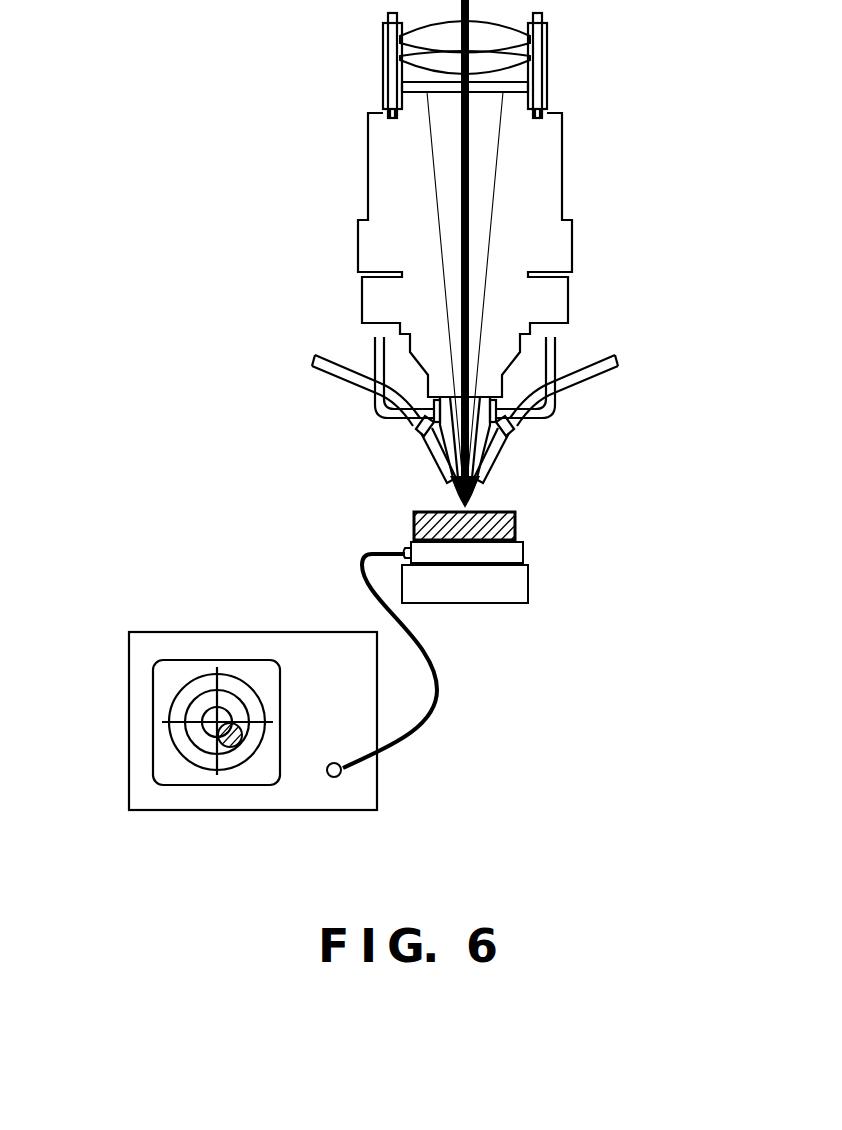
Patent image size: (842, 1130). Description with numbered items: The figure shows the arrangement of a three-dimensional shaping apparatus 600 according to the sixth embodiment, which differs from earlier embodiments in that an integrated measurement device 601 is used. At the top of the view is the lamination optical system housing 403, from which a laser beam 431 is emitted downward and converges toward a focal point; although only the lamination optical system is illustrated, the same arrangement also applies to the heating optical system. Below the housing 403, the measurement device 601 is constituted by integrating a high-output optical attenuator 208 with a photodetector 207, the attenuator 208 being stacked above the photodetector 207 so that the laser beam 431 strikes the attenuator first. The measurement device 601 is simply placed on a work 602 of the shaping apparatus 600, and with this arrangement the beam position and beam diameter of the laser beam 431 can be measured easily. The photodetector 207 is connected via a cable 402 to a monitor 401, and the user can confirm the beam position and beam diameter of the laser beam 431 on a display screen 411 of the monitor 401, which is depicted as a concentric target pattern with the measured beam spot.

The 3D shaping apparatus 600 is at (306, 98).
The lamination optical system housing 403 is at (368, 157).
The laser beam 431 is at (461, 243).
The high-output optical attenuator 208 is at (517, 525).
The photodetector 207 is at (525, 553).
The measurement device 601 is at (619, 505).
The work 602 is at (528, 590).
The monitor 401 is at (188, 632).
The display screen 411 is at (155, 693).
The cable 402 is at (438, 695).